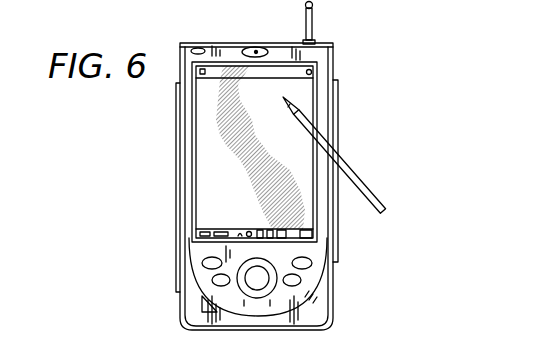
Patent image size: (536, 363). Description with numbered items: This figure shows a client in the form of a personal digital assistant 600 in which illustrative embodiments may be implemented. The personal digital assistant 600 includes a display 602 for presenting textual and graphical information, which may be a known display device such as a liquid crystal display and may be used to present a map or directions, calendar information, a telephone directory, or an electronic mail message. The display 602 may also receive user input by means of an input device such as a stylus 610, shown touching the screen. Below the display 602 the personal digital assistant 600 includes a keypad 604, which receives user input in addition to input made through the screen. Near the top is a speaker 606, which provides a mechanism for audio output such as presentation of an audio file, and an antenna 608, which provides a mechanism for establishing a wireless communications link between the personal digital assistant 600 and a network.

The personal digital assistant 600 is at (174, 206).
The display 602 is at (248, 217).
The keypad 604 is at (347, 258).
The speaker 606 is at (253, 47).
The antenna 608 is at (313, 25).
The stylus 610 is at (360, 173).